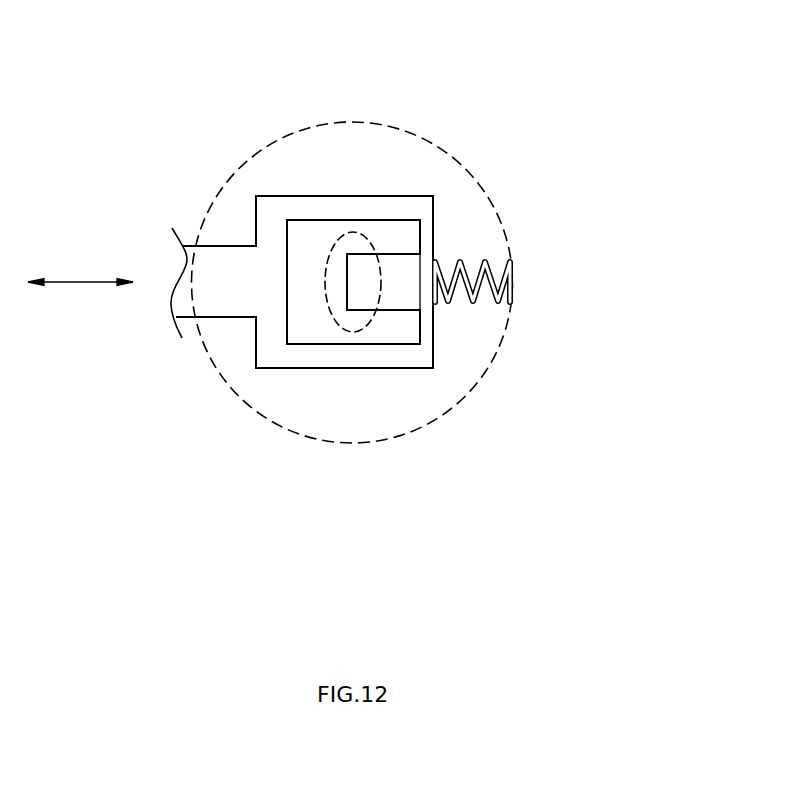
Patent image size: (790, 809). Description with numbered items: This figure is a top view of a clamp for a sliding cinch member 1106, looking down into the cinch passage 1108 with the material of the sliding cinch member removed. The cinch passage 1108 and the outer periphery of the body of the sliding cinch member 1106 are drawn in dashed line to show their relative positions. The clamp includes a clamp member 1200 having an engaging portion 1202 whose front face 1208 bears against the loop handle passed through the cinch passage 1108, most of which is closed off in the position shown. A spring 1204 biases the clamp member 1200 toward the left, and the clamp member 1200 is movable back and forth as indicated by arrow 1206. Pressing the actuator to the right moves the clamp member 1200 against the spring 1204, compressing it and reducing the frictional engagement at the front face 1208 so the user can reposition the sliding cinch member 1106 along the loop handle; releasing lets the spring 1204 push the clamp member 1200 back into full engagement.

The sliding cinch member 1106 is at (352, 122).
The cinch passage 1108 is at (363, 237).
The clamp member 1200 is at (293, 197).
The engaging portion 1202 is at (365, 285).
The spring 1204 is at (513, 280).
The arrow 1206 is at (80, 283).
The front face 1208 is at (347, 282).